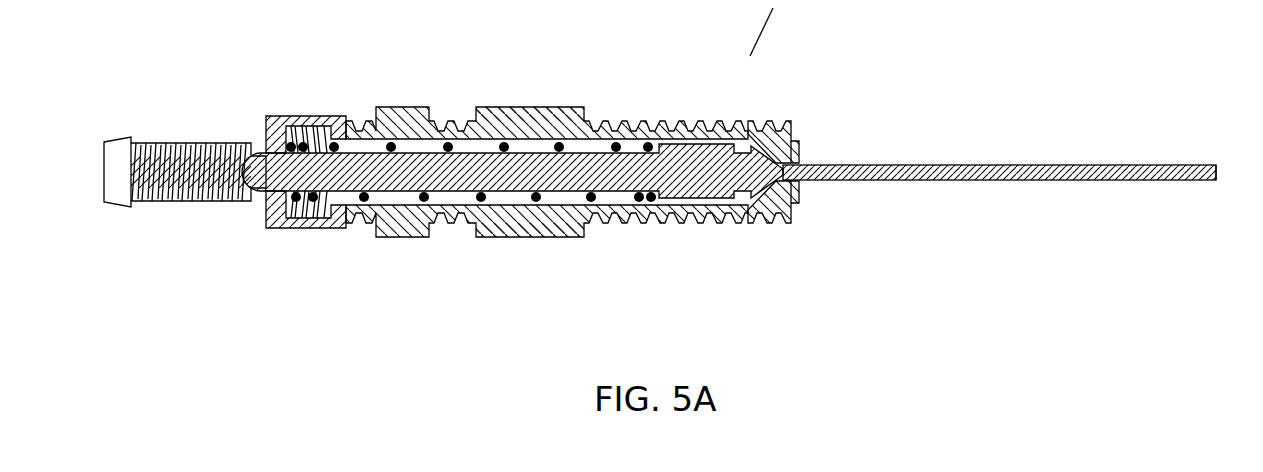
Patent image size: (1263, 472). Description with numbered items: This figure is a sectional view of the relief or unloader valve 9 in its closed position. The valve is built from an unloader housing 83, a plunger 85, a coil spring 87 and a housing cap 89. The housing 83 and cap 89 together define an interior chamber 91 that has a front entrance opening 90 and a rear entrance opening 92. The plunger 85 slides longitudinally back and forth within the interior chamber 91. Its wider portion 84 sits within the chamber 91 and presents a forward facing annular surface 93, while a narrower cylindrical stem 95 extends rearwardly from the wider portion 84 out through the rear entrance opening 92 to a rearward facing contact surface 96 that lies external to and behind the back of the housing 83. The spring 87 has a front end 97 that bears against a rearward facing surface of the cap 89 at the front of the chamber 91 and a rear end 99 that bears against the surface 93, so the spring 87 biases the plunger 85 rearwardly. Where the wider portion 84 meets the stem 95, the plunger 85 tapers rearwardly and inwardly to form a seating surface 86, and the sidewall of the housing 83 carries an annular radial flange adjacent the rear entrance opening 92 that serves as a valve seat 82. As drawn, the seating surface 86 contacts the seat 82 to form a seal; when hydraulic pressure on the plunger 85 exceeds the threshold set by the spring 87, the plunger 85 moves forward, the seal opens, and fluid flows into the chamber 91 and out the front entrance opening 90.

The unloader valve 9 is at (765, 40).
The valve seat 82 is at (797, 208).
The unloader housing 83 is at (493, 101).
The wider portion 84 is at (706, 130).
The plunger 85 is at (423, 136).
The seating surface 86 is at (748, 215).
The coil spring 87 is at (560, 128).
The housing cap 89 is at (295, 112).
The front entrance opening 90 is at (103, 165).
The interior chamber 91 is at (497, 198).
The rear entrance opening 92 is at (800, 150).
The forward facing annular surface 93 is at (655, 120).
The narrow stem 95 is at (940, 159).
The contact surface 96 is at (1218, 172).
The front end 97 is at (265, 138).
The rear end 99 is at (662, 215).